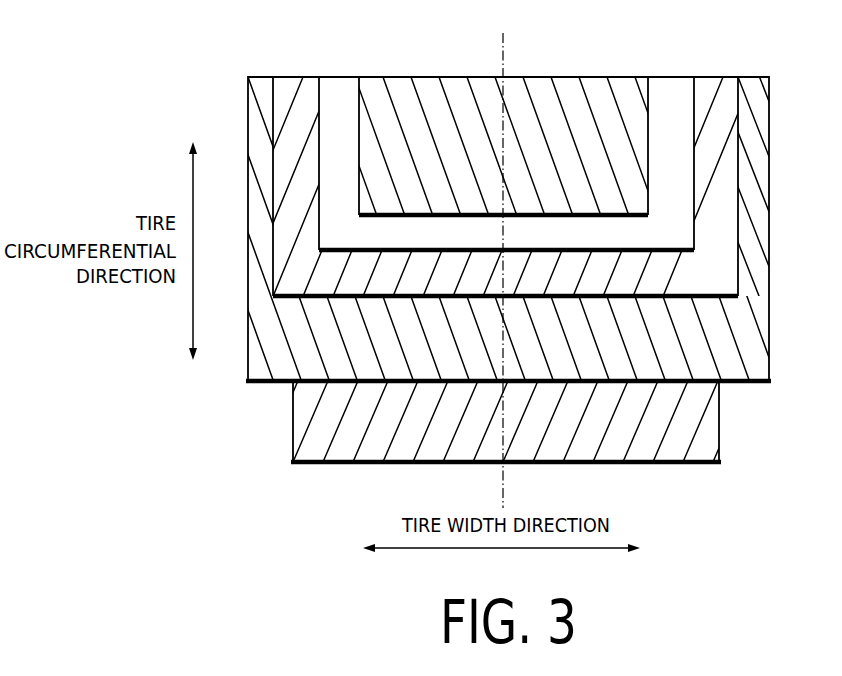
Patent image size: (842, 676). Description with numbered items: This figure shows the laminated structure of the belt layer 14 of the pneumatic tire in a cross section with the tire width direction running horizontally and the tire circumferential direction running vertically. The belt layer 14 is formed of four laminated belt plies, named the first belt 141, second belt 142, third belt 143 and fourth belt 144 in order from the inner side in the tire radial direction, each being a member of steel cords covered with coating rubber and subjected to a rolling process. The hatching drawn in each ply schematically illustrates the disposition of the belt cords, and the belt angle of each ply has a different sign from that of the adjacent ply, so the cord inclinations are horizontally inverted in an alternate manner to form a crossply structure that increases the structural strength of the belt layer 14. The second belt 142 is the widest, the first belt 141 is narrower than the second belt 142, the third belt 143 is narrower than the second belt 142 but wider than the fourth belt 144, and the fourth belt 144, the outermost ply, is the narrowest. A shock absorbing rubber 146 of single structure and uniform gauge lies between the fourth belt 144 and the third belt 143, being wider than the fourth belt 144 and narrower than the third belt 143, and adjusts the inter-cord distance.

The belt layer 14 is at (475, 232).
The first belt 141 is at (702, 423).
The second belt 142 is at (753, 185).
The third belt 143 is at (715, 95).
The fourth belt 144 is at (588, 95).
The shock absorbing rubber 146 is at (667, 95).